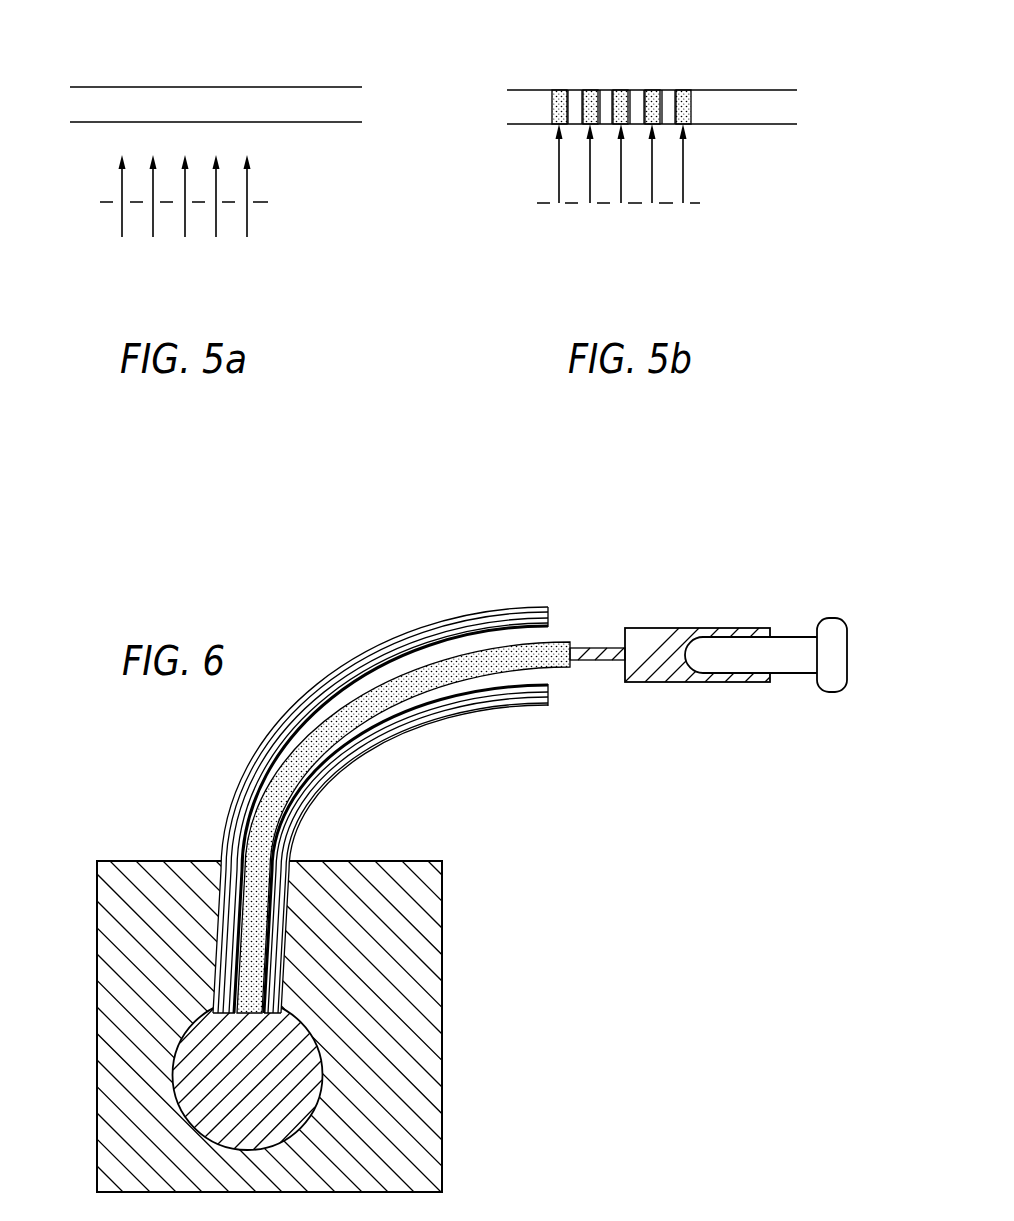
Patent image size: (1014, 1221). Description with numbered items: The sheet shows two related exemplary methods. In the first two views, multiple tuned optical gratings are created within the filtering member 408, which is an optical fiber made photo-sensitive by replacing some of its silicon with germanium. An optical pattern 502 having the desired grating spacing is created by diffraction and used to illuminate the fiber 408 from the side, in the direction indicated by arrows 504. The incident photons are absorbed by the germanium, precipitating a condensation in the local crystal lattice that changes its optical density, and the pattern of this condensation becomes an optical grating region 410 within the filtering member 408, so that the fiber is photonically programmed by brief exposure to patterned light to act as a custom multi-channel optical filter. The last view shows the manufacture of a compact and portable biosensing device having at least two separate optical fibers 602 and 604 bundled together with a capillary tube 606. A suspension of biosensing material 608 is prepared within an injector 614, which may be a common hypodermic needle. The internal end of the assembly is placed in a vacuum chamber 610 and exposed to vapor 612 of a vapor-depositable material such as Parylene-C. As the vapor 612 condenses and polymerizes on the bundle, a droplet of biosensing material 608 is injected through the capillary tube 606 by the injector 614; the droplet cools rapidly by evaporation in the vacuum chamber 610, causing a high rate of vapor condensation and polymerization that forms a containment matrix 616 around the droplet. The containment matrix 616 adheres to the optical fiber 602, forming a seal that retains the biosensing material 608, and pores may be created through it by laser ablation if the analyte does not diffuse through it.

In FIG. 5A, the filtering member 408 is at (333, 112).
In FIG. 5B, the filtering member 408 is at (769, 115).
In FIG. 5B, the optical grating region 410 is at (698, 80).
In FIG. 5A, the optical pattern 502 is at (263, 203).
In FIG. 5B, the optical pattern 502 is at (700, 203).
In FIG. 5A, the arrows 504 is at (262, 245).
In FIG. 6, the optical fiber 602 is at (502, 708).
In FIG. 6, the optical fiber 604 is at (445, 621).
In FIG. 6, the capillary tube 606 is at (555, 640).
In FIG. 6, the biosensing material 608 is at (648, 663).
In FIG. 6, the vacuum chamber 610 is at (443, 917).
In FIG. 6, the vapor 612 is at (405, 1030).
In FIG. 6, the injector 614 is at (785, 677).
In FIG. 6, the containment matrix 616 is at (313, 1108).